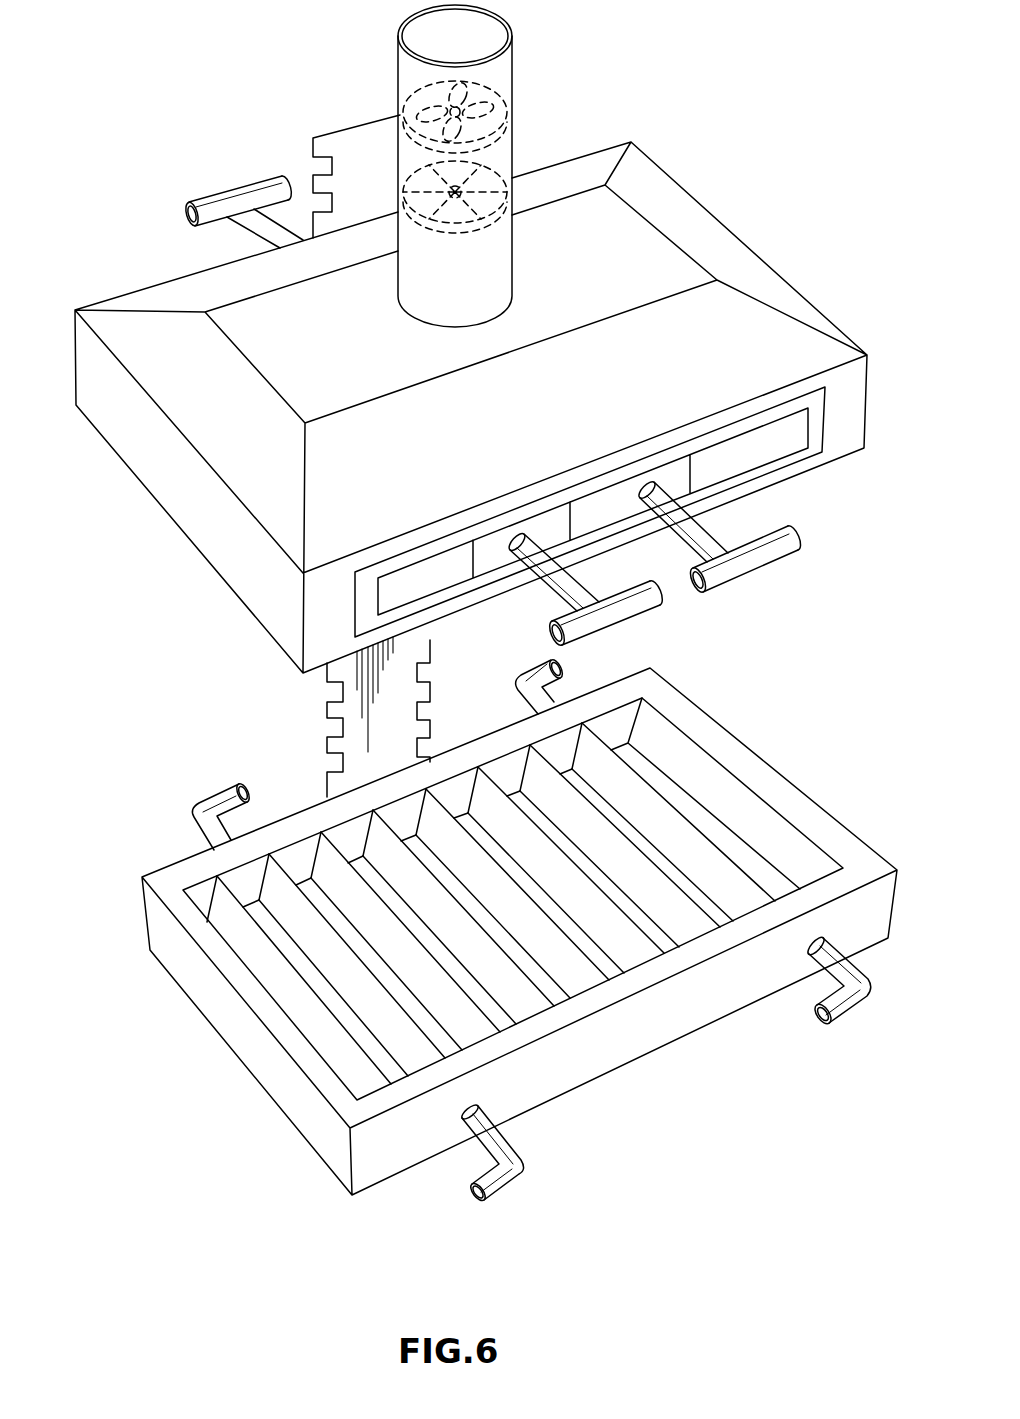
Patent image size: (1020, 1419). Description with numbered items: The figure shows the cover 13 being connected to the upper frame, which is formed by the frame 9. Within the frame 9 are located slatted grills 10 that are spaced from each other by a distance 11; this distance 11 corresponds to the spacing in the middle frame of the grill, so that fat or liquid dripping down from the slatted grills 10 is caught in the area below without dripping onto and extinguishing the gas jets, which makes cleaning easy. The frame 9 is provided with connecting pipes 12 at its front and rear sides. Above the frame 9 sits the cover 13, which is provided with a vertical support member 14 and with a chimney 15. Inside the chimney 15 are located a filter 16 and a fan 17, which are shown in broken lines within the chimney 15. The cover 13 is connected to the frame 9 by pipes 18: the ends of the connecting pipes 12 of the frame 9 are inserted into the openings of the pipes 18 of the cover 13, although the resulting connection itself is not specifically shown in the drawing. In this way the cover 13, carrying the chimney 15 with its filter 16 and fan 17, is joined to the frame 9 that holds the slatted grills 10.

The frame 9 is at (222, 1050).
The slatted grills 10 is at (759, 894).
The distance 11 is at (729, 917).
The connecting pipes 12 is at (517, 672).
The cover 13 is at (160, 515).
The vertical support member 14 is at (325, 735).
The chimney 15 is at (508, 140).
The filter 16 is at (508, 173).
The fan 17 is at (507, 97).
The pipes 18 is at (212, 196).